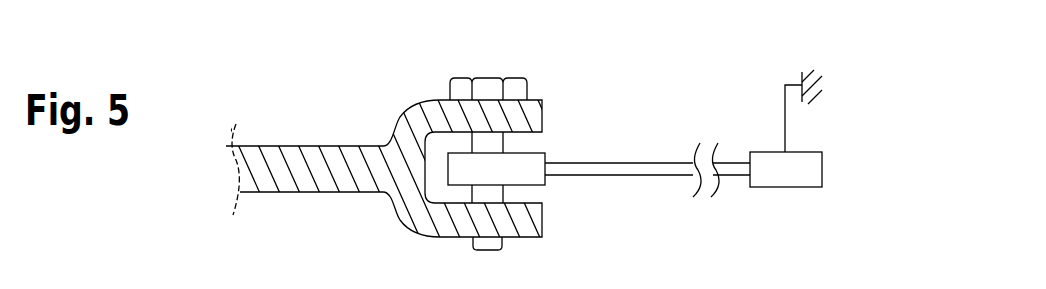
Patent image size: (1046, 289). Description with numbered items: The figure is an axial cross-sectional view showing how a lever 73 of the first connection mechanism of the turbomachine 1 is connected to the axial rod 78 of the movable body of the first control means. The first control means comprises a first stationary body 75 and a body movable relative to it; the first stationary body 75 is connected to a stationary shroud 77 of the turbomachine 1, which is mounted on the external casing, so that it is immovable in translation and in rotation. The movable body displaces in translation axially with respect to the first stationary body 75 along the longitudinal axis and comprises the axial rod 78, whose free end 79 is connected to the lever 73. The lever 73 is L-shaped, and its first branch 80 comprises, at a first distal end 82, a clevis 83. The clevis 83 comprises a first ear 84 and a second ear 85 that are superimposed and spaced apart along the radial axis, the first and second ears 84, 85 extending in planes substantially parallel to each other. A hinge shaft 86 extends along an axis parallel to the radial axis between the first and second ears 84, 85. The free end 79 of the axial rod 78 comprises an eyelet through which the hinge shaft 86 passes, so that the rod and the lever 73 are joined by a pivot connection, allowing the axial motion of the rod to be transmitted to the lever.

The turbomachine 1 is at (552, 141).
The lever 73 is at (423, 151).
The first stationary body 75 is at (775, 173).
The stationary shroud 77 is at (787, 118).
The axial rod 78 is at (653, 177).
The free end 79 is at (462, 170).
The first branch 80 is at (307, 165).
The first distal end 82 is at (506, 147).
The clevis 83 is at (496, 147).
The first ear 84 is at (527, 118).
The second ear 85 is at (517, 223).
The hinge shaft 86 is at (493, 145).